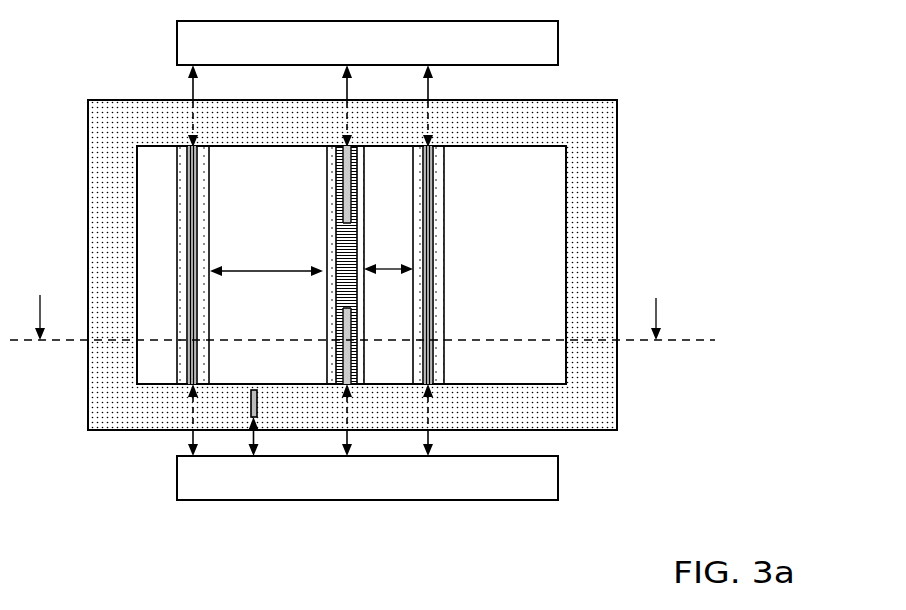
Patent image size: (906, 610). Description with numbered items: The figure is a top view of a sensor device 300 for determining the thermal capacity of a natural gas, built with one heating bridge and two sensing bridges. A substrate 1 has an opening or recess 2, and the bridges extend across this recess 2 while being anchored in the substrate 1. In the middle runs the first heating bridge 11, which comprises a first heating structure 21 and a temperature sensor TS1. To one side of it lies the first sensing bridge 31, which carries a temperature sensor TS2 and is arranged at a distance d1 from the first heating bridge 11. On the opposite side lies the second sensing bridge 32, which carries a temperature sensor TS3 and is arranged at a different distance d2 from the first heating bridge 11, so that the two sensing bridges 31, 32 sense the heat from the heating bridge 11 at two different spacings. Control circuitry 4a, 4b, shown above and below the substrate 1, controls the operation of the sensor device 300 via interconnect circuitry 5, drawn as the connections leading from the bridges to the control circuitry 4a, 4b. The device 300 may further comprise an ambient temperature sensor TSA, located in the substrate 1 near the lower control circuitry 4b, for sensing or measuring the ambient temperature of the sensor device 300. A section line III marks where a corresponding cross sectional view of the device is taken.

The substrate 1 is at (100, 183).
The opening or recess 2 is at (519, 193).
The control circuitry 4a is at (558, 40).
The control circuitry 4b is at (558, 477).
The interconnect circuitry 5 is at (428, 85).
The first heating bridge 11 is at (324, 233).
The first heating structure 21 is at (337, 265).
The first sensing bridge 31 is at (444, 278).
The second sensing bridge 32 is at (210, 301).
The temperature sensor TS1 is at (337, 192).
The temperature sensor TS2 is at (433, 233).
The temperature sensor TS3 is at (197, 201).
The ambient temperature sensor TSA is at (257, 412).
The distance d1 is at (388, 253).
The distance d2 is at (266, 261).
The sensor device 300 is at (807, 495).
The section line III is at (33, 255).